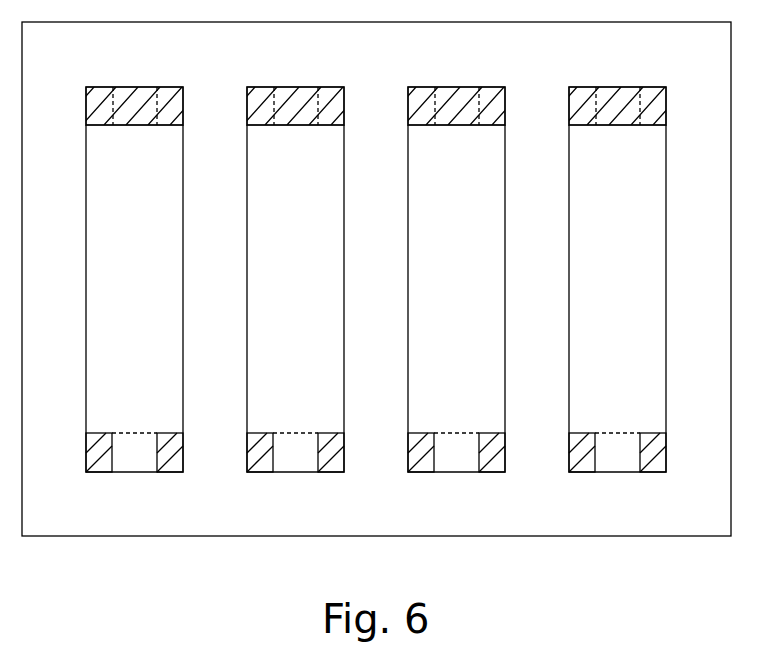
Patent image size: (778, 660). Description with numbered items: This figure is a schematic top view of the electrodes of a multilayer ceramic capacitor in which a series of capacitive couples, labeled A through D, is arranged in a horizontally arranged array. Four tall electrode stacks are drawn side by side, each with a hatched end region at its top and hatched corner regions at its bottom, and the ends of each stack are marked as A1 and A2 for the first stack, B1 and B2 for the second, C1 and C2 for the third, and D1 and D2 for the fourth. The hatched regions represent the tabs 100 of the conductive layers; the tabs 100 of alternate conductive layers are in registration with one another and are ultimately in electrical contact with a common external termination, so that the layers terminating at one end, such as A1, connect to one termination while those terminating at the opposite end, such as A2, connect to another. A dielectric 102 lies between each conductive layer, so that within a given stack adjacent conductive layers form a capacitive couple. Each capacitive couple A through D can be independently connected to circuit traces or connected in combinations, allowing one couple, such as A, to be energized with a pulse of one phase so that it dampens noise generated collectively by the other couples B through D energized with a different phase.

The tabs 100 is at (292, 458).
The dielectric 102 is at (582, 113).
The first end of element A A1 is at (100, 412).
The second end of element A A2 is at (140, 96).
The first end of element B B1 is at (258, 412).
The second end of element B B2 is at (298, 96).
The first end of element C C1 is at (420, 412).
The second end of element C C2 is at (462, 96).
The first end of element D D1 is at (580, 412).
The second end of element D D2 is at (620, 96).